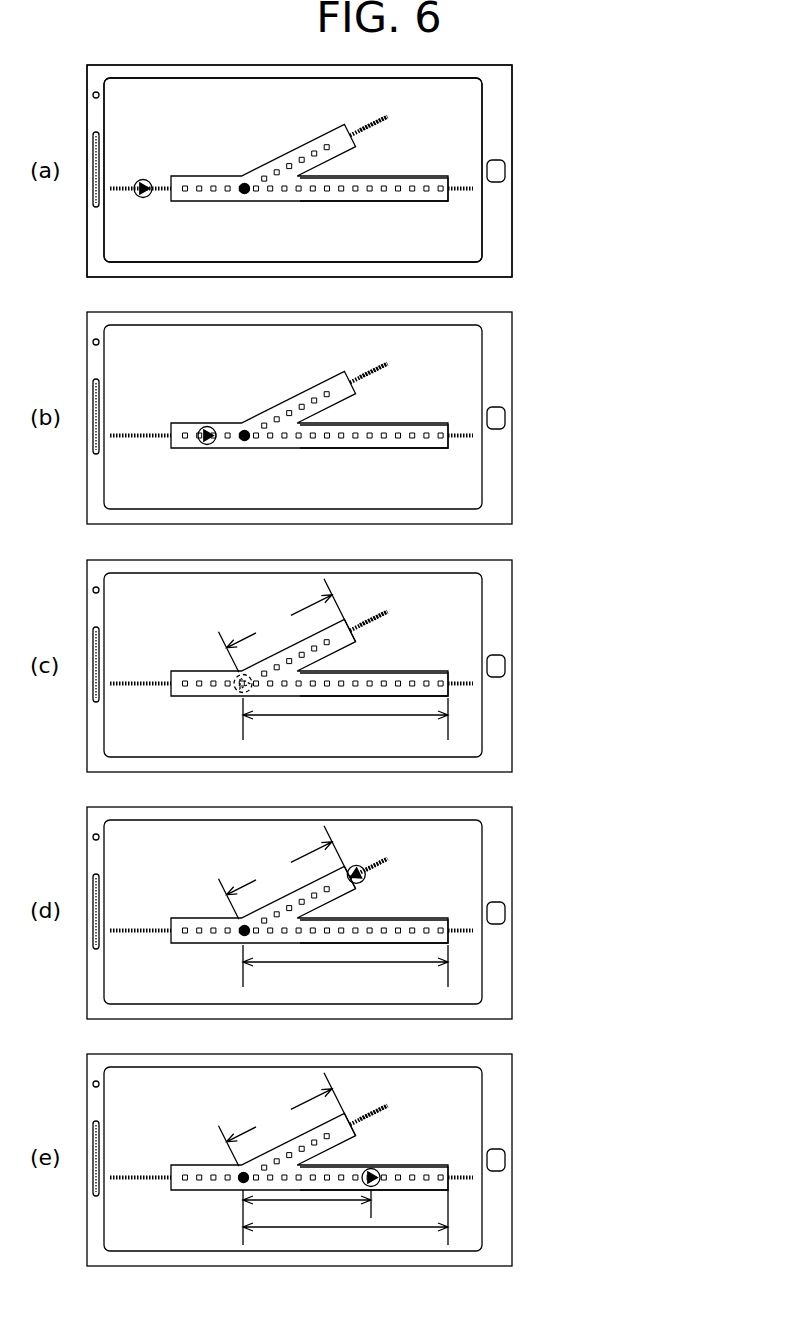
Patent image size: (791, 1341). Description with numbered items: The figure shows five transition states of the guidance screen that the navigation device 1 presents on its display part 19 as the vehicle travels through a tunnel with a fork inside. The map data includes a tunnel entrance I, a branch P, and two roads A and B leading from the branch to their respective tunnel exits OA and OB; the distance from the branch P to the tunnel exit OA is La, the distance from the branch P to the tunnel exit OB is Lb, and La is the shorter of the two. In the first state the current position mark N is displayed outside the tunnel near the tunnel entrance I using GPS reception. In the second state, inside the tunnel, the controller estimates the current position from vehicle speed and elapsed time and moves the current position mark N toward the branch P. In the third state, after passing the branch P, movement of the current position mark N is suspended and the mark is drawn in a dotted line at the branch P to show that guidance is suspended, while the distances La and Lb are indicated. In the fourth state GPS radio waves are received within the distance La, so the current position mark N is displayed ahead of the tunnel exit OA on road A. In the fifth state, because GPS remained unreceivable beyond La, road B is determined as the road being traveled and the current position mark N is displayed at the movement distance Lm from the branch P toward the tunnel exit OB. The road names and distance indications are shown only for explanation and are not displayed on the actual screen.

The navigation device 1 is at (539, 94).
The display part 19 is at (262, 98).
The current position mark N is at (148, 179).
The tunnel entrance I is at (170, 193).
The branch P is at (243, 194).
The tunnel exit OA is at (356, 128).
The road A is at (368, 127).
The tunnel exit OB is at (455, 177).
The road B is at (462, 192).
The distance La is at (287, 873).
The distance Lb is at (345, 975).
The movement distance Lm is at (307, 1207).